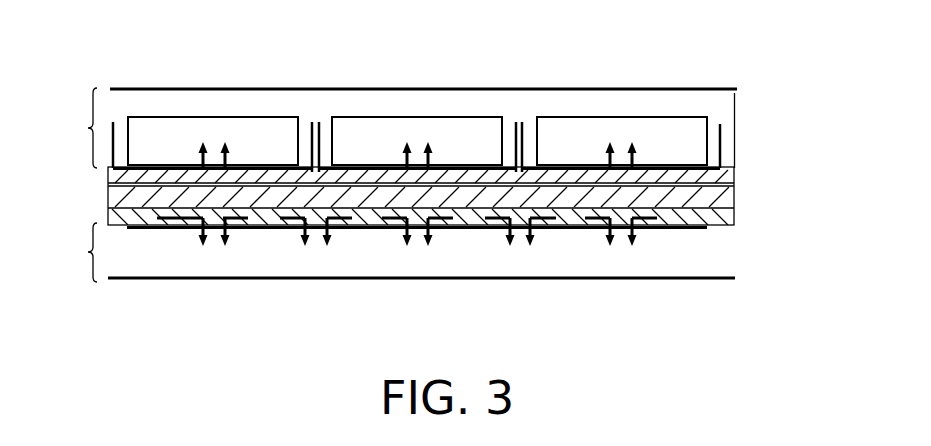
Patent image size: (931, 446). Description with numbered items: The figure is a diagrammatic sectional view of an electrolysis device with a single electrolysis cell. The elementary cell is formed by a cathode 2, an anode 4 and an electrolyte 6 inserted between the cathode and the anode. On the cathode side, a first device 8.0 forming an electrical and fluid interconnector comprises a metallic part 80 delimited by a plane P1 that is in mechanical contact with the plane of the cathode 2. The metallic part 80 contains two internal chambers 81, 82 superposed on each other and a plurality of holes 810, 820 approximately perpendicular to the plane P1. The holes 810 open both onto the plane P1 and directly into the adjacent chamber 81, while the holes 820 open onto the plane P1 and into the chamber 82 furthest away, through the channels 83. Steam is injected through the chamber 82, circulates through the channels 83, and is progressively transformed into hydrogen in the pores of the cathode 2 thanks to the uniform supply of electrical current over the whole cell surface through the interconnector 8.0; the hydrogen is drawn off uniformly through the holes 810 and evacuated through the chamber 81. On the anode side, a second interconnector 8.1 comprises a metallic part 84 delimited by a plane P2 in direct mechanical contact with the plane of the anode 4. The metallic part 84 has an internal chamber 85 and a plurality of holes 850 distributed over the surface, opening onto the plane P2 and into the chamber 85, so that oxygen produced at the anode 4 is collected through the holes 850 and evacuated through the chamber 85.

The internal chamber 82 is at (195, 102).
The internal chamber 85 is at (574, 266).
The internal chamber 81 is at (455, 128).
The channels 83 is at (314, 138).
The first device forming an electrical and fluid interconnector 8.0 is at (748, 105).
The second interconnector 8.1 is at (740, 268).
The holes 810 is at (224, 160).
The holes 820 is at (112, 168).
The cathode 2 is at (735, 175).
The anode 4 is at (734, 213).
The electrolyte 6 is at (676, 200).
The holes 850 is at (195, 232).
The metallic part 80 is at (76, 128).
The metallic part 84 is at (77, 252).
The plane P1 is at (727, 163).
The plane P2 is at (710, 228).